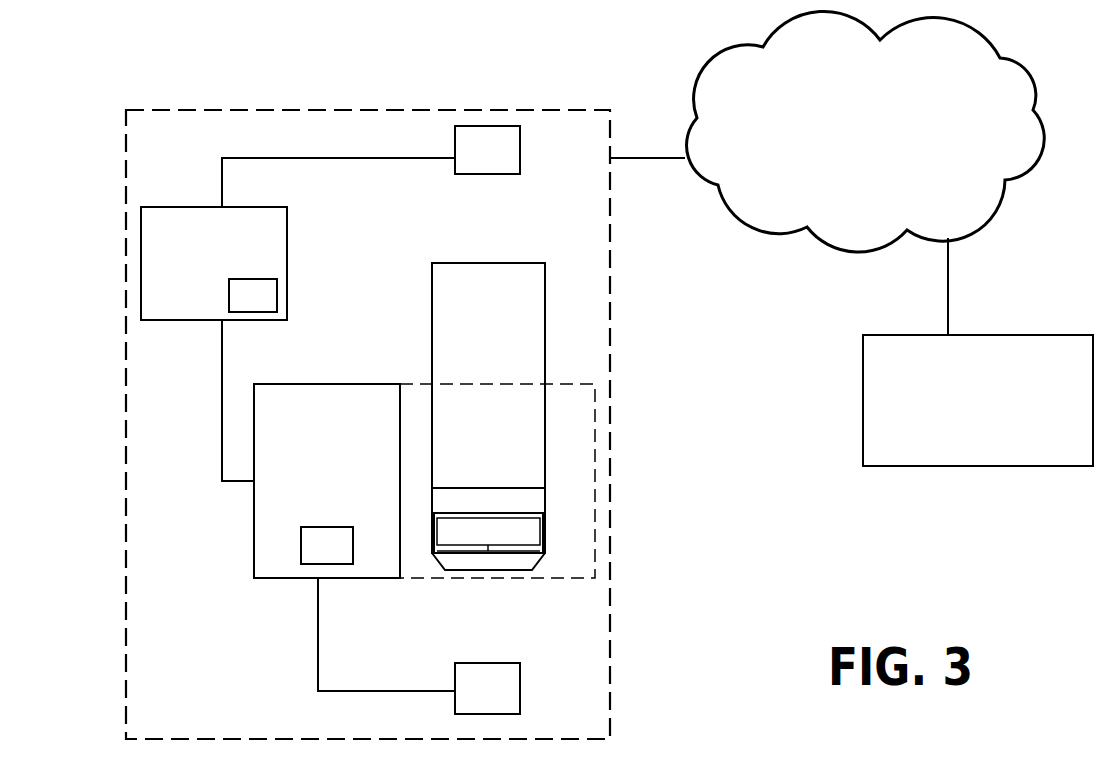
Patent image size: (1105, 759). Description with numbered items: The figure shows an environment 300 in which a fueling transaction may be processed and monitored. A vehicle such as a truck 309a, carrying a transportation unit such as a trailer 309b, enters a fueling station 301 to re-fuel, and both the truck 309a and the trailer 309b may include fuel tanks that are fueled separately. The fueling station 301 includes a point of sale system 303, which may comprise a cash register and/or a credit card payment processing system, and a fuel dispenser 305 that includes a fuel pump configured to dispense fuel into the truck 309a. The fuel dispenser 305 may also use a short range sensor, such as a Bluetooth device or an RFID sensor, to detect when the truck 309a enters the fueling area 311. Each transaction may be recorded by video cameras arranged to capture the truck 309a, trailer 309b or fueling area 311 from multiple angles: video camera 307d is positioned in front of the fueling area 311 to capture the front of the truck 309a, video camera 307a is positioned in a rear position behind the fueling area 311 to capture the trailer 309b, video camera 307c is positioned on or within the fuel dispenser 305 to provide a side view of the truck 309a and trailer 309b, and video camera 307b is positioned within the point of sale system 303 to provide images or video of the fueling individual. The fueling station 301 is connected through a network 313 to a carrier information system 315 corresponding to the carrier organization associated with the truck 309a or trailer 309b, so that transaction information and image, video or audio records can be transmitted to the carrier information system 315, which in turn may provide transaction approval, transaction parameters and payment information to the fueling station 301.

The environment 300 is at (148, 40).
The fueling station 301 is at (175, 148).
The point of sale system 303 is at (168, 306).
The fuel dispenser 305 is at (308, 510).
The video camera 307a is at (502, 174).
The video camera 307b is at (277, 293).
The video camera 307c is at (310, 564).
The video camera 307d is at (520, 680).
The truck 309a is at (460, 540).
The trailer 309b is at (466, 446).
The fueling area 311 is at (595, 478).
The network 313 is at (850, 192).
The carrier information system 315 is at (960, 448).